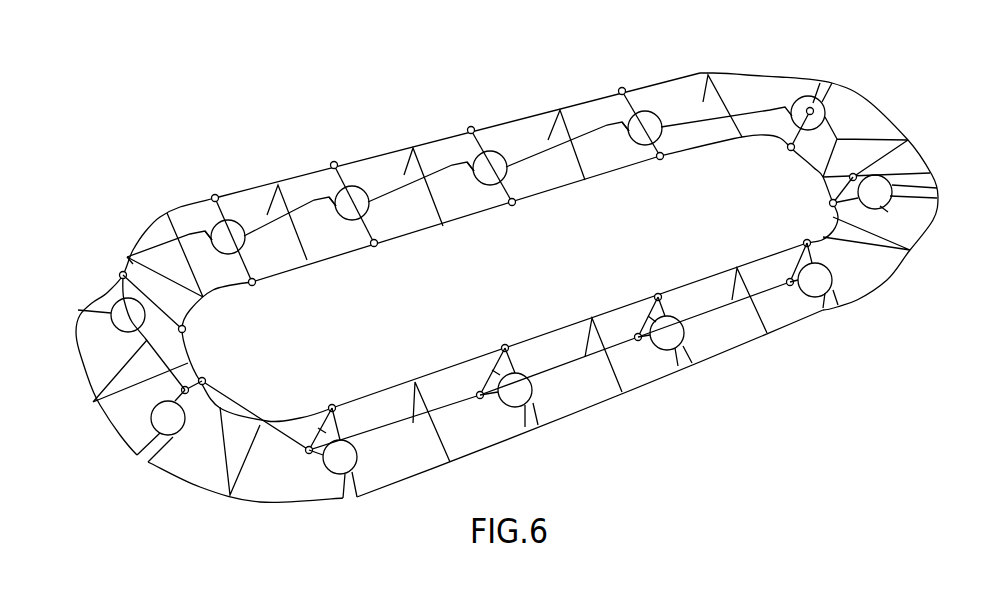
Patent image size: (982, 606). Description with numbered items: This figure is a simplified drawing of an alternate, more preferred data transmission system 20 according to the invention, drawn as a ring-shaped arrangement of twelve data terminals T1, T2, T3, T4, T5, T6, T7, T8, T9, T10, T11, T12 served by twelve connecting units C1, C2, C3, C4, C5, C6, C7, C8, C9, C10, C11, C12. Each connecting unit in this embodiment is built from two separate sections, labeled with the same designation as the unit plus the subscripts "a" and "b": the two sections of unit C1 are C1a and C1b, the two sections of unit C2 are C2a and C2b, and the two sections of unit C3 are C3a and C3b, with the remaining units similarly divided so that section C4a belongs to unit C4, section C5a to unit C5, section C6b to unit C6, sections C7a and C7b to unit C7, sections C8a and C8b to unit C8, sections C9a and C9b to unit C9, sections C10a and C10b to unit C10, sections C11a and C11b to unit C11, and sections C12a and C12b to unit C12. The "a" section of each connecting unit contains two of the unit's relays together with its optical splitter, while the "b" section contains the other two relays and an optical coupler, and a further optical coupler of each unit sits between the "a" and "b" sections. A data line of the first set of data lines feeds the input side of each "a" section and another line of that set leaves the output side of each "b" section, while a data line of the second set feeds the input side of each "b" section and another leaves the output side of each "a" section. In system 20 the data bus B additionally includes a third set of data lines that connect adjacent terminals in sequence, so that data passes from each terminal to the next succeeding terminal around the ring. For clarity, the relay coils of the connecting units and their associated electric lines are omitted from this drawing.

The data transmission system 20 is at (272, 82).
The data bus B is at (534, 114).
The data terminal T1 is at (356, 458).
The data terminal T2 is at (533, 390).
The data terminal T3 is at (685, 333).
The data terminal T4 is at (833, 280).
The data terminal T5 is at (874, 201).
The data terminal T6 is at (825, 110).
The data terminal T7 is at (663, 127).
The data terminal T8 is at (508, 168).
The data terminal T9 is at (370, 205).
The data terminal T10 is at (246, 240).
The data terminal T11 is at (111, 326).
The data terminal T12 is at (179, 433).
The connecting unit C1 is at (307, 406).
The first section of connecting unit C1a is at (334, 405).
The second section of connecting unit C1b is at (291, 465).
The connecting unit C2 is at (482, 364).
The first section of connecting unit C2a is at (480, 398).
The second section of connecting unit C2b is at (506, 345).
The connecting unit C3 is at (655, 294).
The first section of connecting unit C3a is at (659, 294).
The second section of connecting unit C3b is at (639, 340).
The connecting unit C4 is at (796, 239).
The first section of connecting unit C4a is at (790, 285).
The connecting unit C5 is at (830, 203).
The first section of connecting unit C5a is at (856, 176).
The connecting unit C6 is at (788, 150).
The second section of connecting unit C6b is at (811, 108).
The connecting unit C7 is at (643, 80).
The first section of connecting unit C7a is at (622, 88).
The second section of connecting unit C7b is at (661, 159).
The connecting unit C8 is at (466, 125).
The first section of connecting unit C8a is at (515, 204).
The second section of connecting unit C8b is at (472, 127).
The connecting unit C9 is at (332, 161).
The first section of connecting unit C9a is at (336, 162).
The second section of connecting unit C9b is at (377, 245).
The connecting unit C10 is at (212, 193).
The first section of connecting unit C10a is at (255, 284).
The second section of connecting unit C10b is at (216, 195).
The connecting unit C11 is at (114, 249).
The first section of connecting unit C11a is at (119, 275).
The second section of connecting unit C11b is at (186, 329).
The connecting unit C12 is at (222, 379).
The first section of connecting unit C12a is at (205, 382).
The second section of connecting unit C12b is at (182, 391).